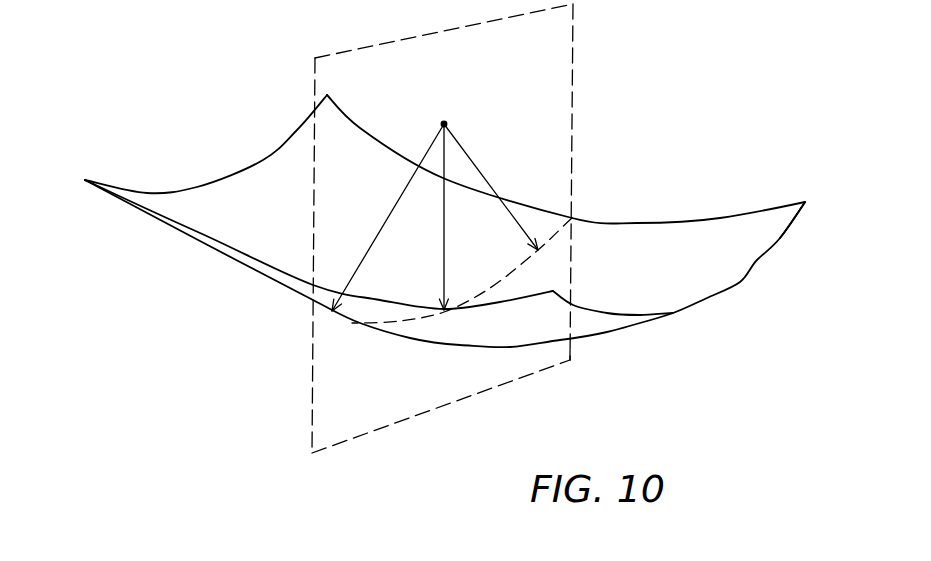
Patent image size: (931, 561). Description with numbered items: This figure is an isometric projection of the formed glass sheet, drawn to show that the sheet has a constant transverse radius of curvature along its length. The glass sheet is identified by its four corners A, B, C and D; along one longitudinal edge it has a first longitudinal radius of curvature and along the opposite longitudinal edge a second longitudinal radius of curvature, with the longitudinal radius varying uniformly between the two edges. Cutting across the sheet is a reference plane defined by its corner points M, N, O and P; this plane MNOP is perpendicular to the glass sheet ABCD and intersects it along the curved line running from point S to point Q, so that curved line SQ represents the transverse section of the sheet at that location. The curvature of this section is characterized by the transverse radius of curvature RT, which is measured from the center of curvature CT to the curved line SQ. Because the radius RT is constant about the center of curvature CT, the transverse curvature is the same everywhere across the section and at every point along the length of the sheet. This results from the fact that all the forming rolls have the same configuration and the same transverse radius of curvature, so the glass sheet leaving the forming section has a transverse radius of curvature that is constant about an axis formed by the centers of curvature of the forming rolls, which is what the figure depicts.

The corner point of plane MNOP O is at (315, 58).
The corner point of plane MNOP P is at (573, 4).
The corner point of plane MNOP N is at (312, 453).
The corner point of plane MNOP M is at (570, 360).
The corner of glass sheet ABCD D is at (85, 180).
The corner of glass sheet ABCD C is at (327, 95).
The end point of curved line SQ S is at (321, 303).
The corner of glass sheet ABCD A is at (553, 291).
The end point of curved line SQ Q is at (572, 218).
The corner of glass sheet ABCD B is at (805, 202).
The center of curvature CT is at (444, 124).
The transverse radius of curvature RT is at (507, 162).